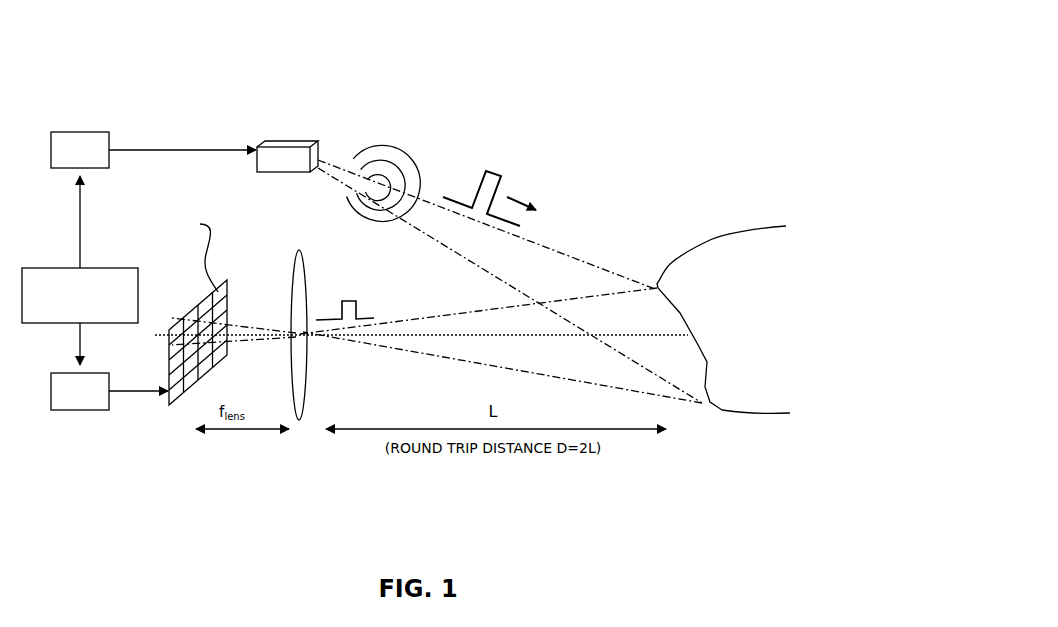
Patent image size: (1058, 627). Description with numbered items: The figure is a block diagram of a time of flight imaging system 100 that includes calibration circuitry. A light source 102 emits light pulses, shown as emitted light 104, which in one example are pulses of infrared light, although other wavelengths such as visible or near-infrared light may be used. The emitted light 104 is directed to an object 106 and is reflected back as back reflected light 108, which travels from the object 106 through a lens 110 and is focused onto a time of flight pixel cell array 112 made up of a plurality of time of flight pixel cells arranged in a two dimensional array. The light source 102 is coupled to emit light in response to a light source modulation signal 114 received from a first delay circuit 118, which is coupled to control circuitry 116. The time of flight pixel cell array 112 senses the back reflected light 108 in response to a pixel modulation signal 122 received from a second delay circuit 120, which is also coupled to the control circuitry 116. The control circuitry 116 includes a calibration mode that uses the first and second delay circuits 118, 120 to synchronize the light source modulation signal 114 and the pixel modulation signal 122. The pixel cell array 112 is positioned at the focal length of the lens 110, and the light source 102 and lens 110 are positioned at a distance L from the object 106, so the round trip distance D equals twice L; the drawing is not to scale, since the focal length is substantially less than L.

The time of flight imaging system 100 is at (731, 11).
The light source 102 is at (326, 147).
The emitted light 104 is at (487, 163).
The object 106 is at (690, 250).
The back reflected light 108 is at (343, 301).
The lens 110 is at (296, 258).
The time of flight pixel cell array 112 is at (196, 310).
The light source modulation signal 114 is at (184, 145).
The control circuitry 116 is at (68, 268).
The first delay circuit 118 is at (78, 132).
The second delay circuit 120 is at (89, 412).
The pixel modulation signal 122 is at (135, 395).